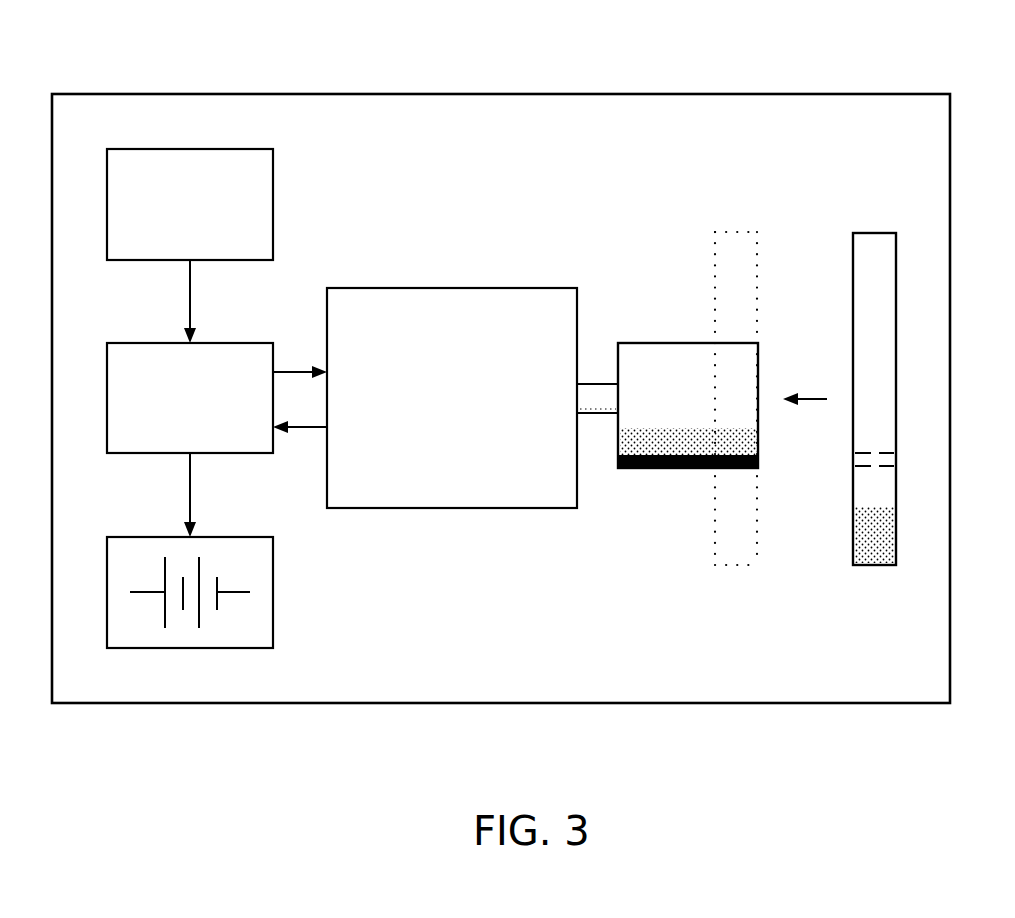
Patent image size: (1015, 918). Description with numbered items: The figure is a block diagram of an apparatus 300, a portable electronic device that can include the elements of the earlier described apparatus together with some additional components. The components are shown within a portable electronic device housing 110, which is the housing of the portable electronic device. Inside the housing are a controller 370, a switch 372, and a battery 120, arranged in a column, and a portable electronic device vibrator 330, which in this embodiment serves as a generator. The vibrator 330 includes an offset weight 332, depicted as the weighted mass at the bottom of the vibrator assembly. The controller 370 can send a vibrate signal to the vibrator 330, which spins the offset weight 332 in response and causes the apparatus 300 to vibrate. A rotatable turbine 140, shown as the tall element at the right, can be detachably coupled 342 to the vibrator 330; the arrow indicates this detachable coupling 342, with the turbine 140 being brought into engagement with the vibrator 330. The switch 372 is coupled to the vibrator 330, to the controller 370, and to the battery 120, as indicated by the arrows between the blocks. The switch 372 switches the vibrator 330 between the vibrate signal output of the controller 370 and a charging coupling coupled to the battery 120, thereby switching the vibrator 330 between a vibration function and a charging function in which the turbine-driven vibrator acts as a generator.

The apparatus 300 is at (972, 68).
The portable electronic device housing 110 is at (749, 94).
The controller 370 is at (275, 175).
The switch 372 is at (238, 343).
The battery 120 is at (275, 578).
The portable electronic device vibrator 330 is at (500, 288).
The offset weight 332 is at (618, 460).
The detachable coupling 342 is at (805, 399).
The rotatable turbine 140 is at (890, 233).